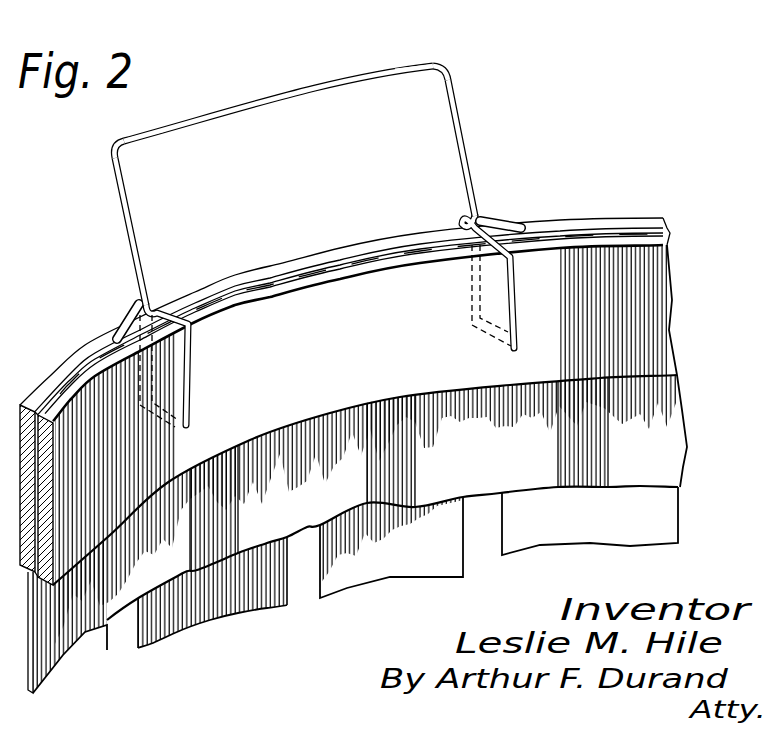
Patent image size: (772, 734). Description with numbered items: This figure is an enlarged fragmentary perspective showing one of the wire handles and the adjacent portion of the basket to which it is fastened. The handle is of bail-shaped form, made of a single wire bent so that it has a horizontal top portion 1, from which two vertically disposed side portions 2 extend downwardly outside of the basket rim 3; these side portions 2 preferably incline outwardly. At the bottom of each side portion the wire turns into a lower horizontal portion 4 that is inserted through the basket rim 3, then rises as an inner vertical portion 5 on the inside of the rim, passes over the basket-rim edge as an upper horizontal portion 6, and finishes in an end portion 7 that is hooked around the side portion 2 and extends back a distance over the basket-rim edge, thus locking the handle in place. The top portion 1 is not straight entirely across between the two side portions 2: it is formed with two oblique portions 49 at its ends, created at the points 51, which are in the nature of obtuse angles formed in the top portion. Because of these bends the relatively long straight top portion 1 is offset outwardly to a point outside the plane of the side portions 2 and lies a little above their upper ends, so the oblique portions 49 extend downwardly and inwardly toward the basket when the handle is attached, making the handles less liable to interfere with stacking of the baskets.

The horizontal top portion 1 is at (278, 97).
The side portions 2 is at (132, 209).
The basket rim 3 is at (595, 246).
The lower horizontal portions 4 is at (190, 401).
The inner vertical portions 5 is at (192, 351).
The upper horizontal portions 6 is at (167, 302).
The end portions 7 is at (126, 313).
The oblique portions 49 is at (117, 135).
The points 51 is at (148, 132).